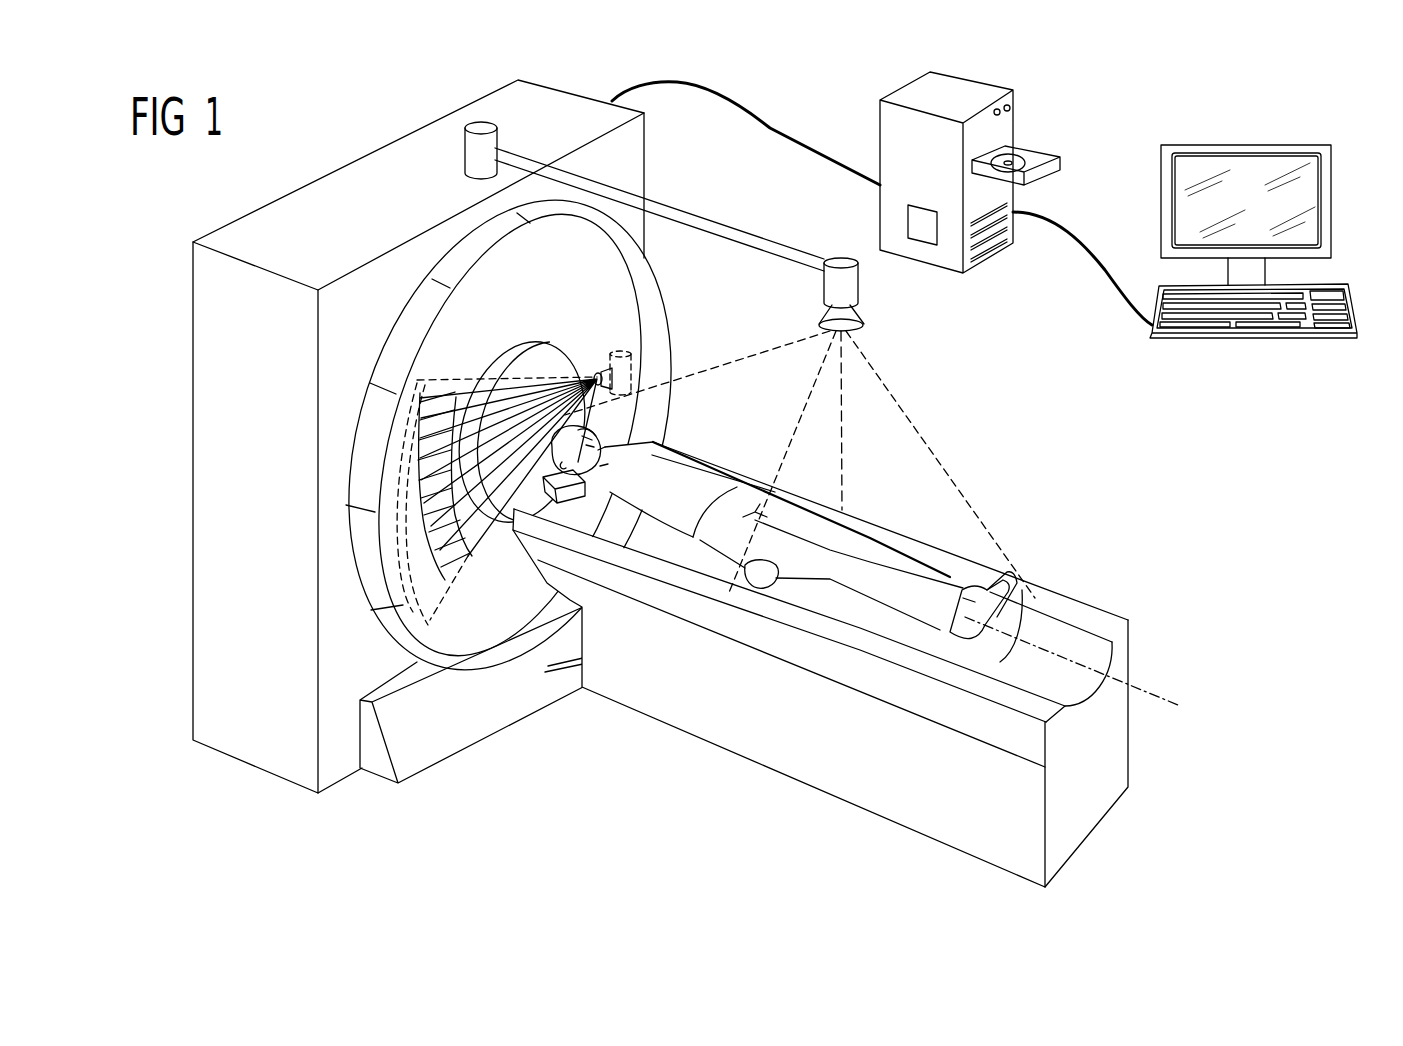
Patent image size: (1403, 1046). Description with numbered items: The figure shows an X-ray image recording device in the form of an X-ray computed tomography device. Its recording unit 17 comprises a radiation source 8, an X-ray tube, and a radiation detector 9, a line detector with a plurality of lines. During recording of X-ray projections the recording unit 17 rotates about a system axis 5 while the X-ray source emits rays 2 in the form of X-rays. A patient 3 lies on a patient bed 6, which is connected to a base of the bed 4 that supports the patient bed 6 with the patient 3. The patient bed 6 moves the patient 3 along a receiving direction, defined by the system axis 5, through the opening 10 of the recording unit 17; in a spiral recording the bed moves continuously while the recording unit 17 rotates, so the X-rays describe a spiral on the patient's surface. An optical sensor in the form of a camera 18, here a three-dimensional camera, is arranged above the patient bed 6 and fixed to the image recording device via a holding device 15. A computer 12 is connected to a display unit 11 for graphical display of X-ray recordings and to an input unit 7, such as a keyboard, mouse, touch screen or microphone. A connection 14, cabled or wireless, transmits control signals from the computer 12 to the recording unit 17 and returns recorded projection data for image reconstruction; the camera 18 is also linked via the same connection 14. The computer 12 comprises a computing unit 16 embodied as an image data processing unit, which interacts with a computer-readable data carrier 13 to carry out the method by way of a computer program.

The rays 2 is at (548, 372).
The patient 3 is at (705, 482).
The base of the bed 4 is at (833, 783).
The system axis 5 is at (1165, 703).
The patient bed 6 is at (1093, 610).
The input unit 7 is at (1225, 338).
The radiation source 8 is at (627, 366).
The radiation detector 9 is at (440, 590).
The opening 10 is at (495, 378).
The display unit 11 is at (1161, 218).
The computer 12 is at (967, 105).
The computer-readable data carrier 13 is at (1028, 157).
The connection 14 is at (786, 130).
The holding device 15 is at (722, 226).
The computing unit 16 is at (922, 242).
The recording unit 17 is at (665, 307).
The camera 18 is at (842, 250).